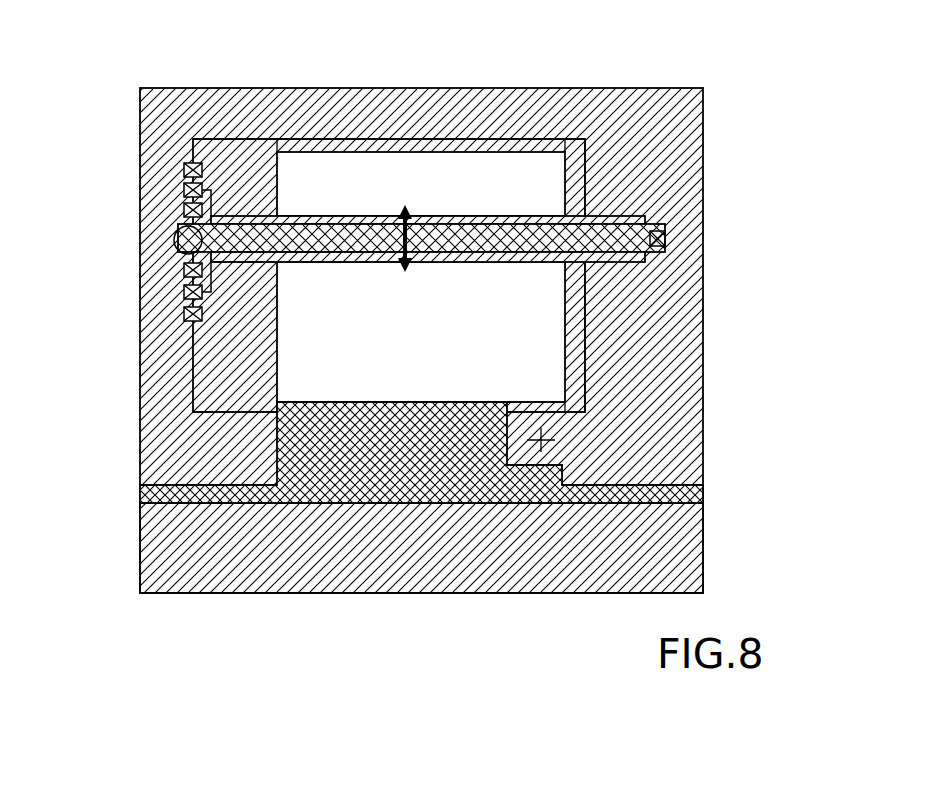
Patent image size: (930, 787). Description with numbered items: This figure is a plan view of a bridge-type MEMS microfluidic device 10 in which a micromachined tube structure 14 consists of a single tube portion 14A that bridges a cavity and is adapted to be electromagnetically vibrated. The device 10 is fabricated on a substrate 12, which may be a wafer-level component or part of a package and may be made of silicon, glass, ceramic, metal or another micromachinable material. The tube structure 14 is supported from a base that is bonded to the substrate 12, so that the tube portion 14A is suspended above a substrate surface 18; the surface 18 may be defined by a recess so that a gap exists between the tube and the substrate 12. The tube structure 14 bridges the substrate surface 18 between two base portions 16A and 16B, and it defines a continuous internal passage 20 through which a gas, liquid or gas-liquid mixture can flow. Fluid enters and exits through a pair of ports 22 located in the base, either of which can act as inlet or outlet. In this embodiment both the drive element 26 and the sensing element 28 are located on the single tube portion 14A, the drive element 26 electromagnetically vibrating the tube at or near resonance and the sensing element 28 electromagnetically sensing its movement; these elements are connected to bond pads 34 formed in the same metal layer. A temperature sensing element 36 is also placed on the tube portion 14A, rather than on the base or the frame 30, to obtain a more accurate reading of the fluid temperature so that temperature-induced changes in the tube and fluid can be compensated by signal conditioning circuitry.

The microfluidic device 10 is at (301, 55).
The substrate 12 is at (527, 580).
The tube structure 14 is at (470, 193).
The tube portion 14A is at (368, 263).
The base portion 16A is at (160, 365).
The base portion 16B is at (578, 365).
The substrate surface 18 is at (432, 341).
The internal passage 20 is at (478, 250).
The ports 22 is at (178, 245).
The drive element 26 is at (368, 152).
The sensing element 28 is at (422, 263).
The frame 30 is at (570, 88).
The bond pads 34 is at (136, 185).
The temperature sensing element 36 is at (540, 240).